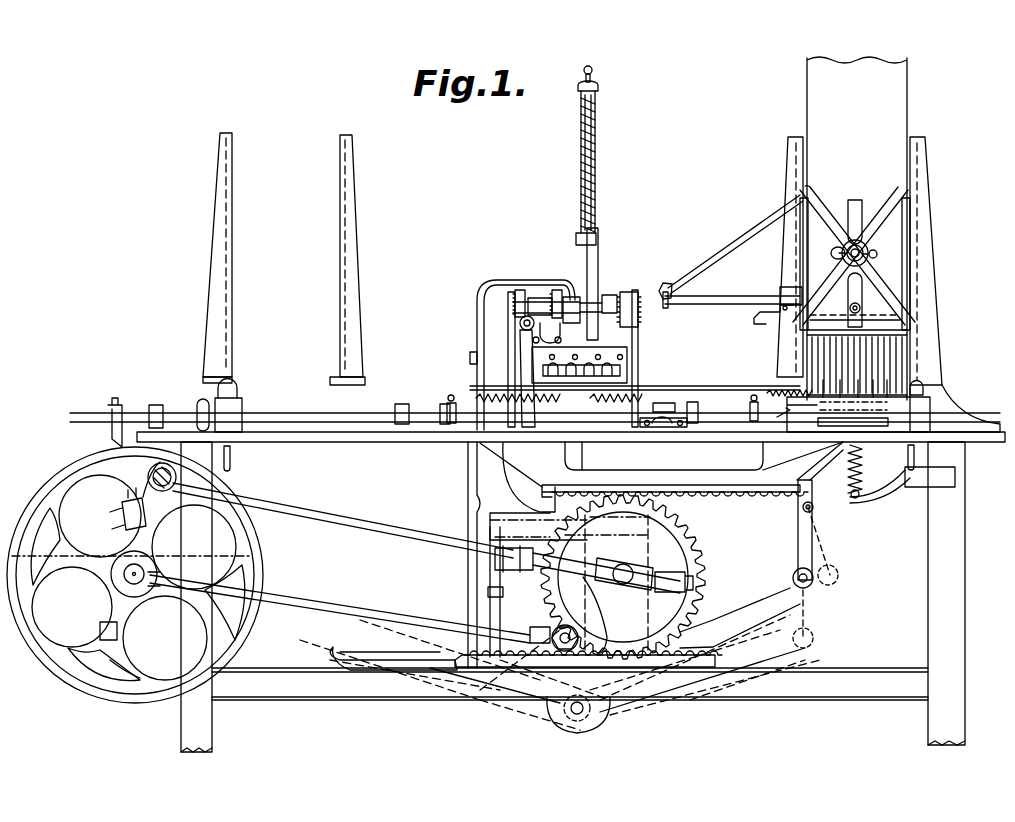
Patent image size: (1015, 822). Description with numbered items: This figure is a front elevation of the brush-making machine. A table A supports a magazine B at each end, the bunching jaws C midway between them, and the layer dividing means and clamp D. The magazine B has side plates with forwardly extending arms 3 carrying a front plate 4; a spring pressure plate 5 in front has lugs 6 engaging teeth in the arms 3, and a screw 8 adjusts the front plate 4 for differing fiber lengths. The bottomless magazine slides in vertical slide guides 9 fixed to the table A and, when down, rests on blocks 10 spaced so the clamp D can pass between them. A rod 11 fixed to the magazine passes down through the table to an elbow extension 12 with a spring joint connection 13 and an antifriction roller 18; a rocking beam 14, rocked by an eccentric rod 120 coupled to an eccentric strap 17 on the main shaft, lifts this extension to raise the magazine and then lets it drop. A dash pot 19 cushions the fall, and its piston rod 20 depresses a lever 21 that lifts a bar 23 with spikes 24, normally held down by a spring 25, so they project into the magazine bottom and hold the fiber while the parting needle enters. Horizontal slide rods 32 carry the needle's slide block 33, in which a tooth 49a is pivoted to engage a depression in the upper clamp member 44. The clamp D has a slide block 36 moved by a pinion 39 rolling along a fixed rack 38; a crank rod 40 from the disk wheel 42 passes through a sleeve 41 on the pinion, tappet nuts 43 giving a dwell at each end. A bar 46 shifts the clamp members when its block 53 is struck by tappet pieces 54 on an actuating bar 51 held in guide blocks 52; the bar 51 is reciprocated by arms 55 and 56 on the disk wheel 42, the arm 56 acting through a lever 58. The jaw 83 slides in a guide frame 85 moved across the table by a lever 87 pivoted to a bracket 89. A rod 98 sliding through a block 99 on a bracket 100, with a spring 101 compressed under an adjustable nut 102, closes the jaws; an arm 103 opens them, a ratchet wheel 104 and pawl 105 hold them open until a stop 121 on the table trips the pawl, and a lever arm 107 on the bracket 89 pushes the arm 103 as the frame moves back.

The table A is at (352, 442).
The magazine B is at (907, 108).
The bunching jaws C is at (630, 368).
The layer dividing means and clamp D is at (672, 390).
The forwardly extending arms 3 is at (805, 335).
The front plate 4 is at (868, 200).
The spring pressure plate 5 is at (870, 278).
The lugs 6 is at (800, 198).
The screw 8 is at (843, 258).
The vertical slide guides 9 is at (228, 248).
The blocks 10 is at (805, 442).
The rod 11 is at (812, 478).
The elbow extension 12 is at (798, 548).
The spring joint connection 13 is at (812, 507).
The rocking beam 14 is at (383, 655).
The eccentric strap 17 is at (70, 598).
The antifriction roller 18 is at (793, 578).
The dash pot 19 is at (242, 400).
The rod 20 is at (231, 456).
The lever 21 is at (895, 490).
The bar 23 is at (870, 428).
The spikes 24 is at (892, 410).
The spring 25 is at (862, 476).
The horizontal slide rods 32 is at (716, 294).
The slide block 33 is at (782, 295).
The slide block 36 is at (505, 452).
The rack 38 is at (660, 688).
The pinion 39 is at (700, 547).
The crank rod 40 is at (372, 520).
The sleeve 41 is at (612, 566).
The disk wheel 42 is at (55, 645).
The tappet nuts 43 is at (666, 574).
The upper clamp member 44 is at (790, 396).
The bar 46 is at (790, 405).
The tooth 49a is at (760, 318).
The actuating bar 51 is at (116, 408).
The guide blocks 52 is at (155, 405).
The block 53 is at (694, 423).
The tappet pieces 54 is at (452, 402).
The arm 55 is at (50, 550).
The arm 56 is at (220, 612).
The lever 58 is at (178, 478).
The jaw 83 is at (605, 357).
The guide frame 85 is at (618, 295).
The lever 87 is at (584, 458).
The bracket 89 is at (515, 526).
The rod 98 is at (595, 213).
The block 99 is at (576, 240).
The bracket 100 is at (598, 262).
The spring 101 is at (595, 170).
The adjustable nut 102 is at (598, 84).
The arm 103 is at (528, 298).
The ratchet wheel 104 is at (557, 290).
The pawl 105 is at (520, 298).
The lever arm 107 is at (470, 358).
The eccentric rod 120 is at (460, 625).
The stop 121 is at (520, 330).